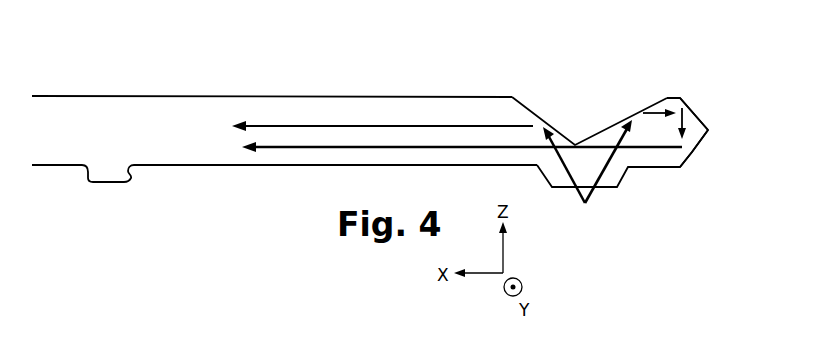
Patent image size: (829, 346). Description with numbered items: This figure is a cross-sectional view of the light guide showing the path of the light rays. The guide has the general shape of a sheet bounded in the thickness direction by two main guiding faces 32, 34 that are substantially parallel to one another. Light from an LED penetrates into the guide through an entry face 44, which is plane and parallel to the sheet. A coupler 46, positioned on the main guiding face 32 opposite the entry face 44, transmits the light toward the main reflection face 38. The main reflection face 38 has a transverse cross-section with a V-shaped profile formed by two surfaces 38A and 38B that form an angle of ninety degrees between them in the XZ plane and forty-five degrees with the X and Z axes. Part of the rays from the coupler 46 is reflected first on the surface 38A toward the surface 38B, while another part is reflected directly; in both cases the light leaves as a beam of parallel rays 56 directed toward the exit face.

The main guiding face 32 is at (182, 92).
The main guiding face 34 is at (182, 172).
The main reflection face 38 is at (706, 108).
The surface 38A is at (689, 106).
The surface 38B is at (697, 153).
The entry face 44 is at (605, 187).
The coupler 46 is at (576, 108).
The beam of parallel rays 56 is at (334, 126).